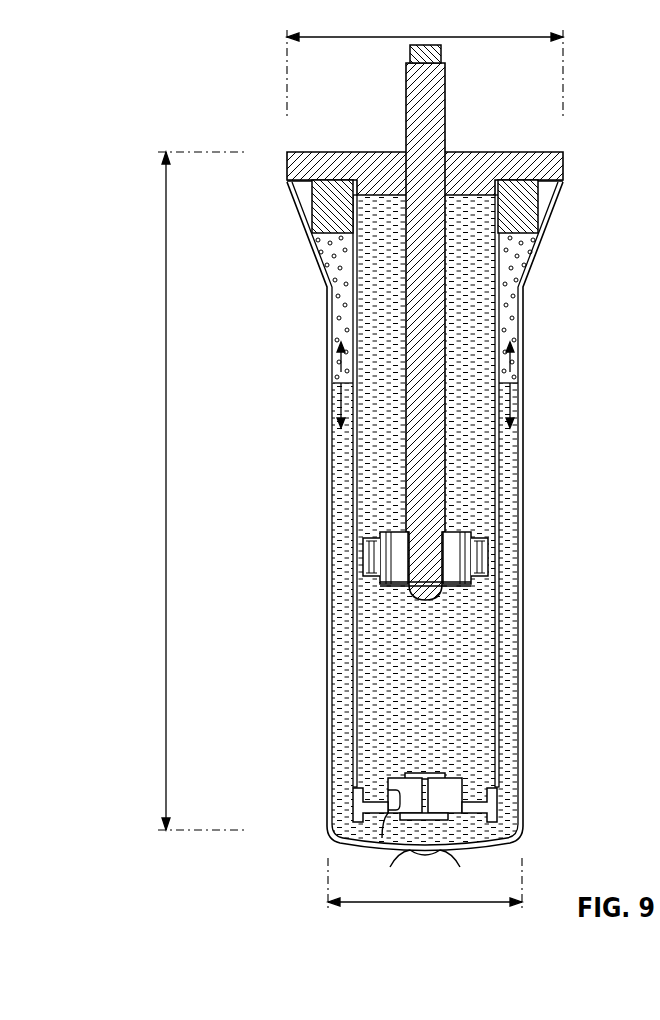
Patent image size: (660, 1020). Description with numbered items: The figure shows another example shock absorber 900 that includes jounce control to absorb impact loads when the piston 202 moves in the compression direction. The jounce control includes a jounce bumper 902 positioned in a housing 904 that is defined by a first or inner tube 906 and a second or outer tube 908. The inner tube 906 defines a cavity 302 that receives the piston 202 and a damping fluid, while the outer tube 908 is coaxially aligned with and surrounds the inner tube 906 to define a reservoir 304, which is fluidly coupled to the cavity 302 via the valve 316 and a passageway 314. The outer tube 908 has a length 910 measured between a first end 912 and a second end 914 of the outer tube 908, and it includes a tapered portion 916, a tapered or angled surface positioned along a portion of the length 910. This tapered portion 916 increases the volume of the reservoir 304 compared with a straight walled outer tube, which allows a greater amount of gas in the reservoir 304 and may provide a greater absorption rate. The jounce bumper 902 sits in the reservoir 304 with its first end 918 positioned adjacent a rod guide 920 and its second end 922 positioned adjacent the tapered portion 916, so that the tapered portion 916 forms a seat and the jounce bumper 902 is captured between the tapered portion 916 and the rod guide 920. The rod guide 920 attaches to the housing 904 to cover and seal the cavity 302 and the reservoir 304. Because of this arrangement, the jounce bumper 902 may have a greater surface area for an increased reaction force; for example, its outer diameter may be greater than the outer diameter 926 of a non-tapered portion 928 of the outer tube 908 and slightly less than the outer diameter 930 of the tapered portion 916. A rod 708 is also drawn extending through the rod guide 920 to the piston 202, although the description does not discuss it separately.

The shock absorber 900 is at (273, 52).
The outer diameter of the tapered portion 930 is at (384, 35).
The piston rod 708 is at (417, 100).
The first end of the jounce bumper 918 is at (334, 183).
The rod guide 920 is at (472, 162).
The first end of the outer tube 912 is at (563, 181).
The jounce bumper 902 is at (320, 215).
The tapered portion 916 is at (313, 254).
The second end of the jounce bumper 922 is at (512, 236).
The length of the outer tube 910 is at (165, 492).
The reservoir 304 is at (342, 465).
The housing 904 is at (523, 520).
The piston 202 is at (392, 553).
The outer tube 908 is at (330, 698).
The inner tube 906 is at (353, 745).
The cavity 302 is at (476, 733).
The non-tapered portion 928 is at (330, 805).
The valve 316 is at (484, 797).
The second end of the outer tube 914 is at (338, 843).
The passageway 314 is at (517, 835).
The outer diameter of the non-tapered portion 926 is at (392, 903).